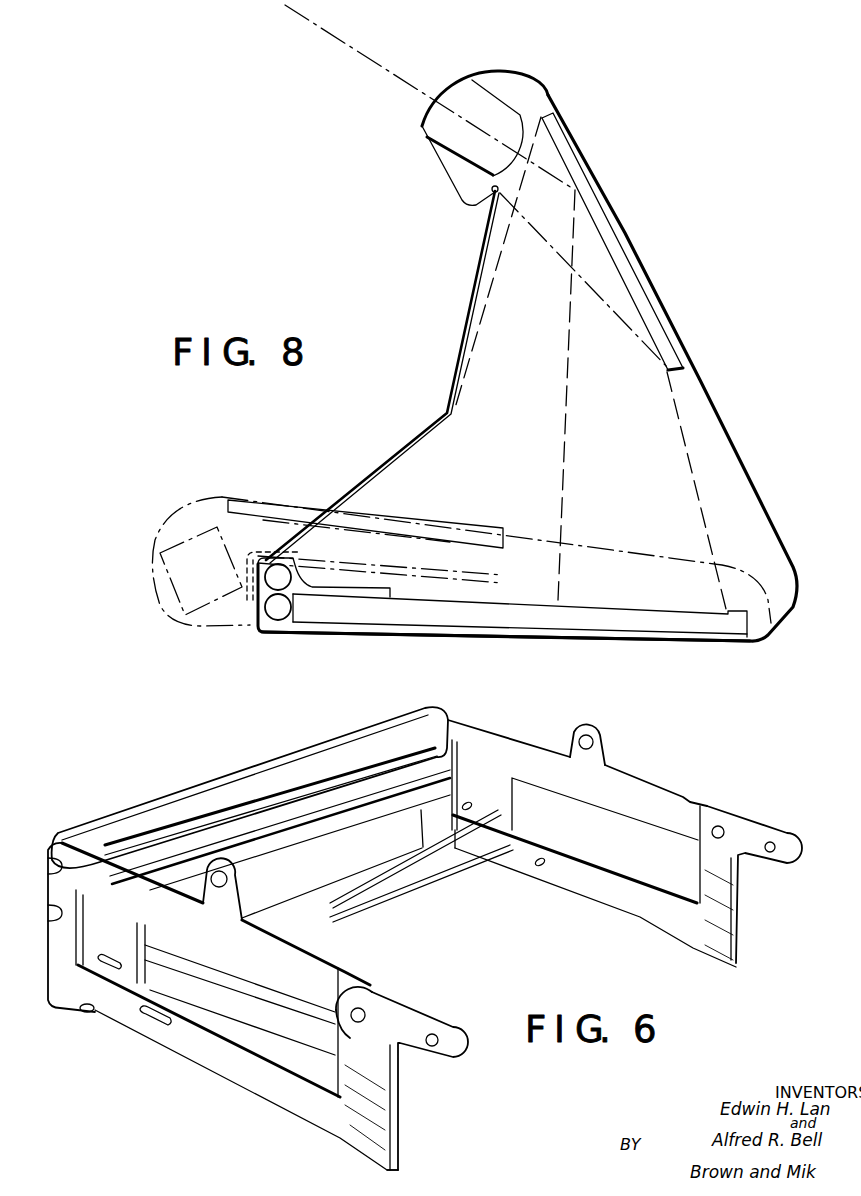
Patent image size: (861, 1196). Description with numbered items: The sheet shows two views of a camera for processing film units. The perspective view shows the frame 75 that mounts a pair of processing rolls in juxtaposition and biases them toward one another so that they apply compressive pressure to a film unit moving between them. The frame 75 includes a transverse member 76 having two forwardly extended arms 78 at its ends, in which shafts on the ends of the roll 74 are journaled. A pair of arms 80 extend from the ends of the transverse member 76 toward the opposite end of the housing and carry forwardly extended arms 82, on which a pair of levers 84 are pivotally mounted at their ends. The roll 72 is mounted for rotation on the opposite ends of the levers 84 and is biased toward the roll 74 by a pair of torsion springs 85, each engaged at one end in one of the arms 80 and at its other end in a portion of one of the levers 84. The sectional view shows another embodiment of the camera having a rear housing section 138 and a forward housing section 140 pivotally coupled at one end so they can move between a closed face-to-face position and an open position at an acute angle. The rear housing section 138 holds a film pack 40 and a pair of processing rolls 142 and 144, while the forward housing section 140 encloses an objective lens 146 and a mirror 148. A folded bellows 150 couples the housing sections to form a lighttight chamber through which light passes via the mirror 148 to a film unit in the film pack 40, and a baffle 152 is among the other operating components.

In FIG. 8, the film pack 40 is at (490, 622).
In FIG. 8, the rear housing section 138 is at (645, 642).
In FIG. 8, the forward housing section 140 is at (600, 151).
In FIG. 8, the processing roll 142 is at (279, 575).
In FIG. 8, the processing roll 144 is at (277, 612).
In FIG. 8, the objective lens 146 is at (470, 92).
In FIG. 8, the mirror 148 is at (632, 282).
In FIG. 8, the folded bellows 150 is at (466, 328).
In FIG. 8, the baffle 152 is at (507, 203).
In FIG. 6, the roll 72 is at (252, 773).
In FIG. 6, the roll 74 is at (345, 833).
In FIG. 6, the frame 75 is at (408, 1113).
In FIG. 6, the transverse member 76 is at (337, 887).
In FIG. 6, the forwardly extended arm 78 is at (66, 945).
In FIG. 6, the arm 80 is at (233, 1073).
In FIG. 6, the forwardly extended arm 82 is at (723, 873).
In FIG. 6, the lever 84 is at (606, 768).
In FIG. 6, the torsion spring 85 is at (450, 853).